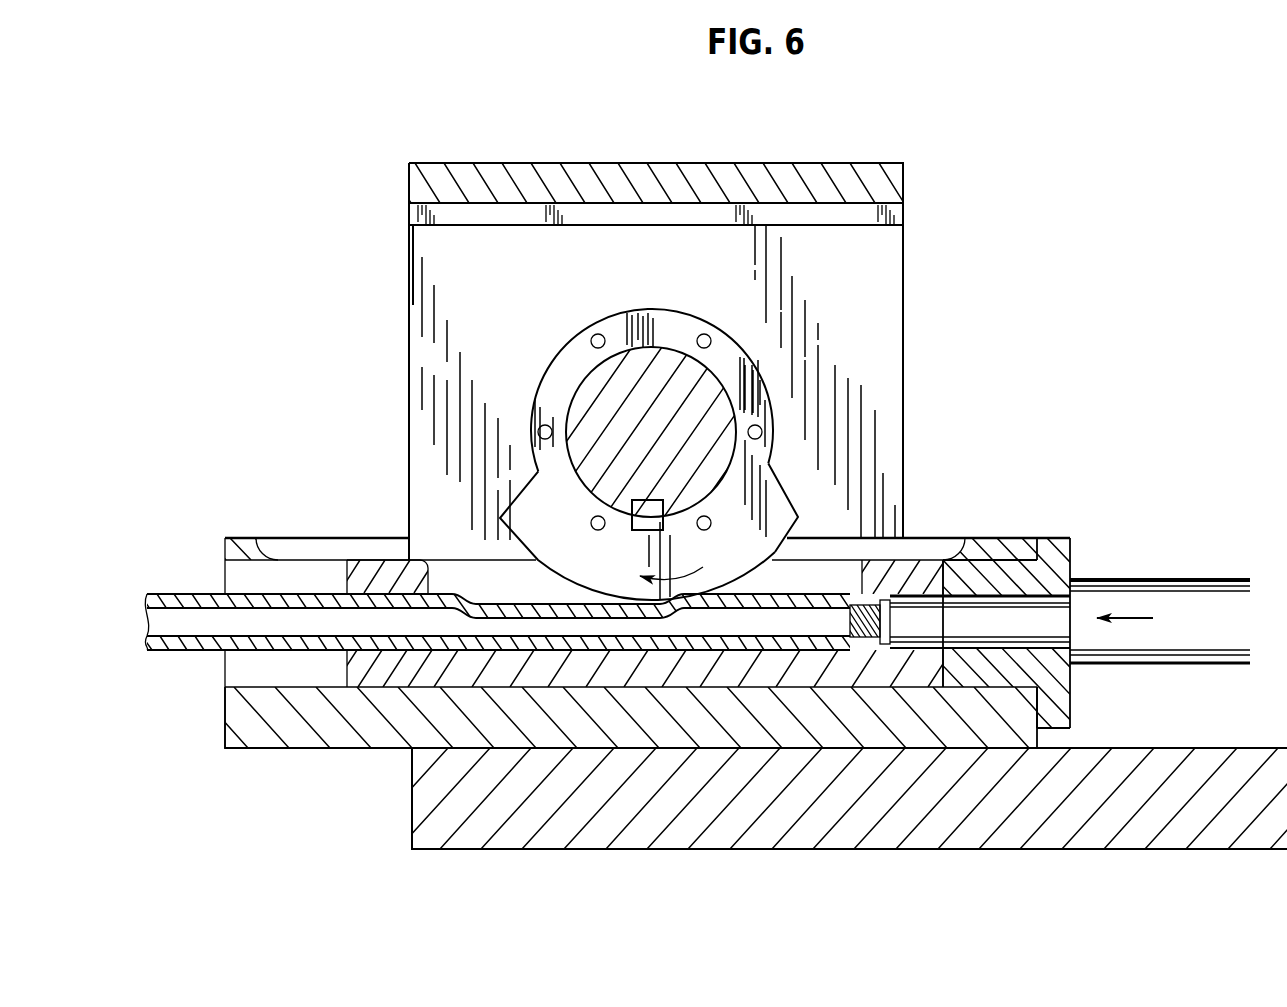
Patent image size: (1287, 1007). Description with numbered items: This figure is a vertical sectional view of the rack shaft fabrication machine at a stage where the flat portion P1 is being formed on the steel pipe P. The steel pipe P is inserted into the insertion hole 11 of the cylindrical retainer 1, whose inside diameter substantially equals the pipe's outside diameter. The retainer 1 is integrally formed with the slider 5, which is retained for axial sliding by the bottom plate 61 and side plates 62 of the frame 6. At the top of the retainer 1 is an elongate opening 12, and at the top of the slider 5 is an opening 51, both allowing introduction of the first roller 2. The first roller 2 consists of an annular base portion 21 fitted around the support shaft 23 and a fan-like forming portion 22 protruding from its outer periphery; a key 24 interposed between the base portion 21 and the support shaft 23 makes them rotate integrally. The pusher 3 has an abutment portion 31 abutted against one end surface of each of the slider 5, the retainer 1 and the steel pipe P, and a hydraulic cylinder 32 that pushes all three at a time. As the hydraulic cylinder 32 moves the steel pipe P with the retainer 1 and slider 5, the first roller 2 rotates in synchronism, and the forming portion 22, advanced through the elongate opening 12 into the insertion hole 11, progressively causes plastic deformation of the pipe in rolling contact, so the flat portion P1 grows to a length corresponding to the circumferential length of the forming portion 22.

The retainer 1 is at (830, 672).
The insertion hole 11 is at (352, 640).
The elongate opening 12 is at (812, 572).
The first roller 2 is at (649, 425).
The base portion 21 is at (560, 377).
The forming portion 22 is at (775, 492).
The support shaft 23 is at (646, 360).
The key 24 is at (650, 506).
The pusher 3 is at (1070, 610).
The abutment portion 31 is at (1028, 618).
The hydraulic cylinder 32 is at (1195, 637).
The slider 5 is at (315, 718).
The opening 51 is at (925, 547).
The frame 6 is at (788, 162).
The bottom plate 61 is at (1137, 822).
The side plates 62 is at (870, 287).
The steel pipe P is at (518, 611).
The flat portion P1 is at (493, 602).